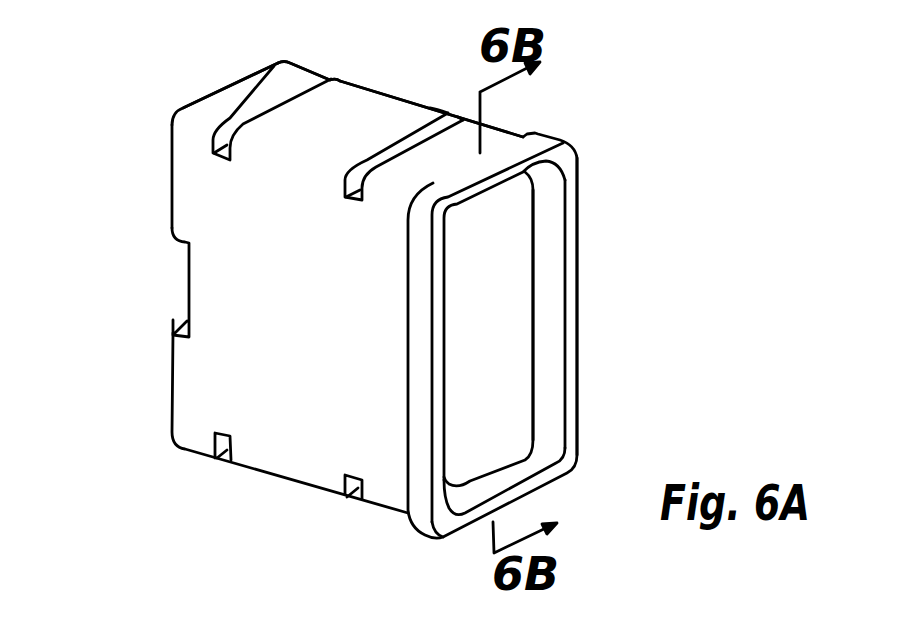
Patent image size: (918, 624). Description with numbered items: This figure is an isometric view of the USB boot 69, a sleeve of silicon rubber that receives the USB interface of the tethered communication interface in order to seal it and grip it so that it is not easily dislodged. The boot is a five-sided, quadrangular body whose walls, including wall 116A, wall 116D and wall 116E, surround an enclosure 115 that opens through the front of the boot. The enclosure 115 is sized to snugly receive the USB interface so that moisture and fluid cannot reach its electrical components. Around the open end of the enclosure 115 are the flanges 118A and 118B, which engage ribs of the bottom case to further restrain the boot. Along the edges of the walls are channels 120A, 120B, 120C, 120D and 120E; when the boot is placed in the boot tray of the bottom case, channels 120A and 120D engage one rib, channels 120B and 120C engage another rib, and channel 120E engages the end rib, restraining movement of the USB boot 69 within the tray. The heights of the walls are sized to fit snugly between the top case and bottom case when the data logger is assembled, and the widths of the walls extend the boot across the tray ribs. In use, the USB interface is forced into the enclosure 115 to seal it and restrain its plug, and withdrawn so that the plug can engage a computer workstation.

The USB boot 69 is at (622, 170).
The enclosure 115 is at (512, 307).
The wall 116A is at (367, 107).
The wall 116D is at (512, 252).
The wall 116E is at (190, 388).
The flange 118A is at (407, 508).
The flange 118B is at (570, 392).
The channel 120A is at (272, 103).
The channel 120B is at (433, 130).
The channel 120C is at (350, 490).
The channel 120D is at (221, 452).
The channel 120E is at (182, 320).